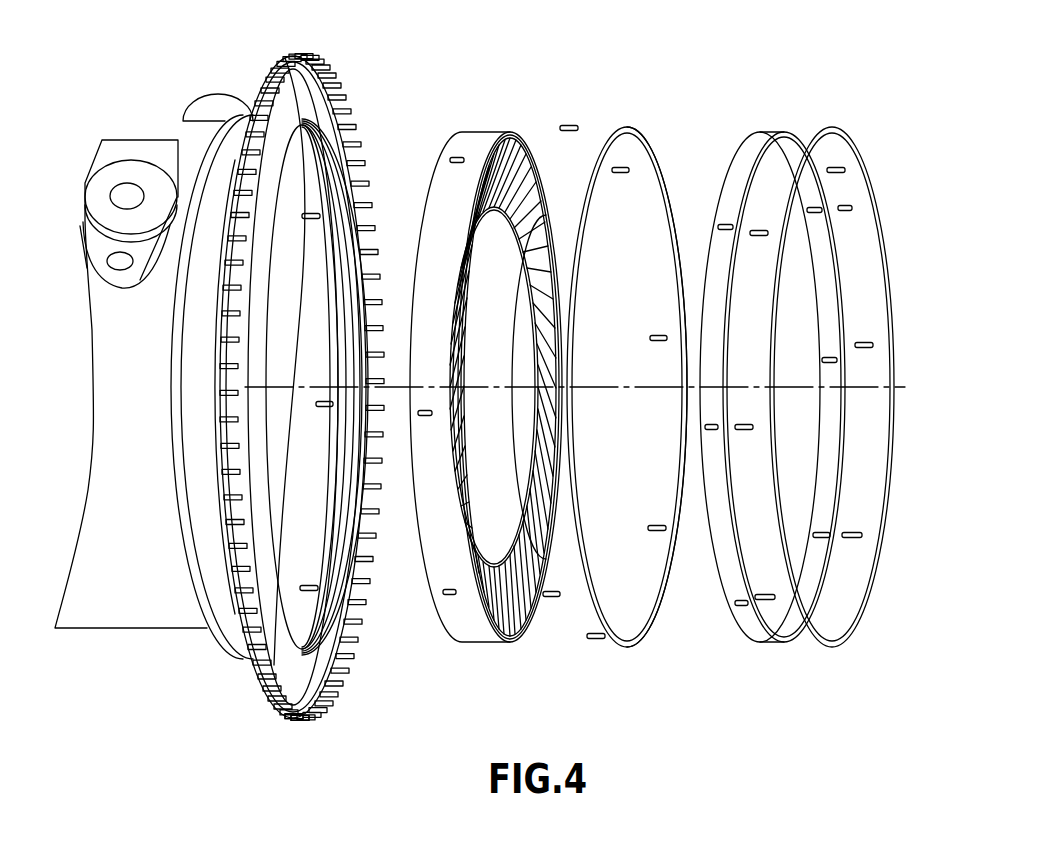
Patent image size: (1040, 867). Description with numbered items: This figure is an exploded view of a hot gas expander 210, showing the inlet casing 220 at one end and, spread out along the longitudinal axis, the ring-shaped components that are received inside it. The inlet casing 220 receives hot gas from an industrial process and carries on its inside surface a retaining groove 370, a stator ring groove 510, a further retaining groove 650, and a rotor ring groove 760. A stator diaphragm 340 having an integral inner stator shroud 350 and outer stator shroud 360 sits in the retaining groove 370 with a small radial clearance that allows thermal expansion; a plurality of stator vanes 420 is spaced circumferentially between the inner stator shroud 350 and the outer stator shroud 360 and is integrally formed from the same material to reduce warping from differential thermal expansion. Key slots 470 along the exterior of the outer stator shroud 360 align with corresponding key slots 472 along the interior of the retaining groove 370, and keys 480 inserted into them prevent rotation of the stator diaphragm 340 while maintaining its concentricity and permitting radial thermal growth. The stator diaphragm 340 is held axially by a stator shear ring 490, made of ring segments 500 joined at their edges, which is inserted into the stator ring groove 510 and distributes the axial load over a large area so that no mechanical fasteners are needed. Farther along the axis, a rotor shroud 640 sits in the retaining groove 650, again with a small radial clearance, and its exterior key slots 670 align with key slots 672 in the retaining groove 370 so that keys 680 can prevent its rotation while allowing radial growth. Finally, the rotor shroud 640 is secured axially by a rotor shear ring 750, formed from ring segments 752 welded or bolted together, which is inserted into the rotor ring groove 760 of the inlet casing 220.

The hot gas expander 210 is at (933, 223).
The inlet casing 220 is at (154, 148).
The retaining groove 370 is at (272, 568).
The stator ring groove 510 is at (280, 61).
The key slots 672 is at (270, 702).
The key slots 472 is at (325, 412).
The retaining groove 650 is at (341, 157).
The rotor ring groove 760 is at (349, 180).
The stator diaphragm 340 is at (496, 391).
The outer stator shroud 360 is at (446, 171).
The stator vanes 420 is at (497, 206).
The inner stator shroud 350 is at (519, 238).
The key slots 470 is at (452, 596).
The ring segments 500 is at (625, 127).
The keys 480 is at (631, 170).
The stator shear ring 490 is at (657, 618).
The rotor shroud 640 is at (767, 132).
The key slots 670 is at (741, 606).
The keys 680 is at (846, 170).
The rotor shear ring 750 is at (854, 419).
The ring segments 752 is at (854, 637).